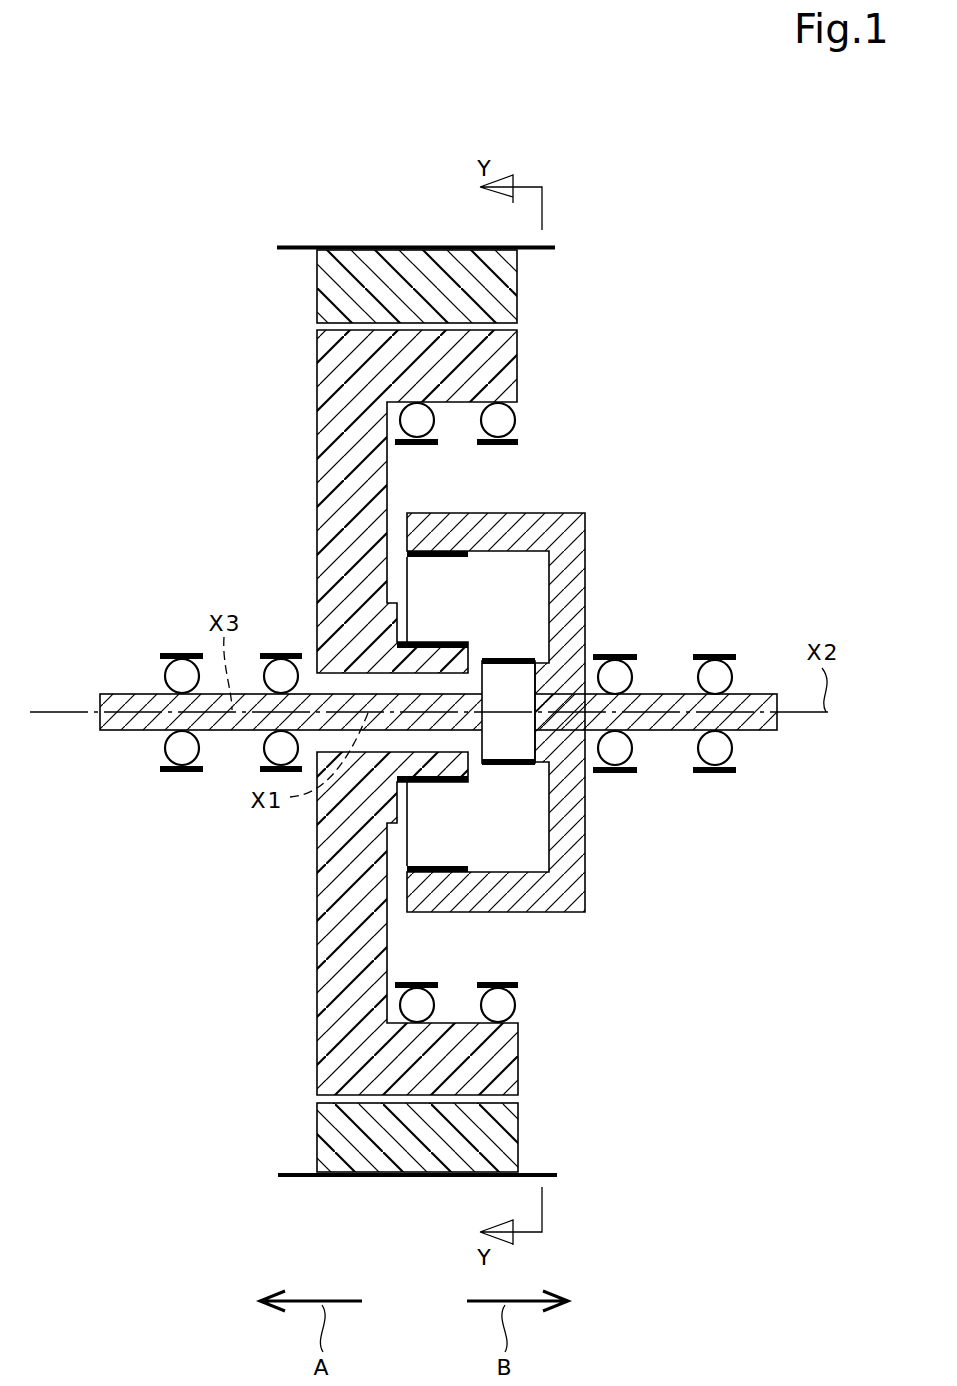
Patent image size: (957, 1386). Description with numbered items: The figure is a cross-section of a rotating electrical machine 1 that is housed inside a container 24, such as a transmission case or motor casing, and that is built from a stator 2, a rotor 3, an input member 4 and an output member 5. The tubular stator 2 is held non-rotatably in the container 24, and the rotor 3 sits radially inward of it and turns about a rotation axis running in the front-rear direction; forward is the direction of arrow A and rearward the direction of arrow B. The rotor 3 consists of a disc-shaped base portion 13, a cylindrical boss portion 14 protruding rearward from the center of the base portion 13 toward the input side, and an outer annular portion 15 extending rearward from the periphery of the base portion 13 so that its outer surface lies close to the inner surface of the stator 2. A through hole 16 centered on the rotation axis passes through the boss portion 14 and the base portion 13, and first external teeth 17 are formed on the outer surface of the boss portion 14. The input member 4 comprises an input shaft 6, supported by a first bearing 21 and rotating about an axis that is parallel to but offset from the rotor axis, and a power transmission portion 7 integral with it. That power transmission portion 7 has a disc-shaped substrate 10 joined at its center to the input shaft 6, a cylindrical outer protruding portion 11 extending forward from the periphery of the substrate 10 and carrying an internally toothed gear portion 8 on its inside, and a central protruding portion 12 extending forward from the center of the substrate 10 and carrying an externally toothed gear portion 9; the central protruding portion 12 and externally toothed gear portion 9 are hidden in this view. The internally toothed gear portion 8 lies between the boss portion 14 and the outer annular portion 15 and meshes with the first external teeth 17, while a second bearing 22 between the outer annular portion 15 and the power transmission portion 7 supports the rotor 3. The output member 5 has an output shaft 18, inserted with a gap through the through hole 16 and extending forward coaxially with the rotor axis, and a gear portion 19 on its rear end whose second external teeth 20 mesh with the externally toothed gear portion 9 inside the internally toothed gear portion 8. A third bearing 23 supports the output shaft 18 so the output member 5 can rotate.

The rotating electrical machine 1 is at (242, 339).
The stator 2 is at (317, 287).
The rotor 3 is at (300, 424).
The input member 4 is at (748, 675).
The output member 5 is at (115, 673).
The input shaft 6 is at (750, 732).
The power transmission portion 7 is at (595, 507).
The internally toothed gear portion 8 is at (466, 563).
The externally toothed gear portion 9 is at (507, 657).
The substrate 10 is at (586, 880).
The outer protruding portion 11 is at (470, 913).
The central protruding portion 12 is at (505, 752).
The base portion 13 is at (317, 930).
The boss portion 14 is at (443, 772).
The outer annular portion 15 is at (518, 1040).
The through hole 16 is at (338, 682).
The first external teeth 17 is at (432, 640).
The output shaft 18 is at (130, 732).
The gear portion 19 is at (588, 796).
The second external teeth 20 is at (587, 658).
The first bearing 21 is at (715, 667).
The second bearing 22 is at (498, 418).
The third bearing 23 is at (280, 752).
The container 24 is at (540, 1173).